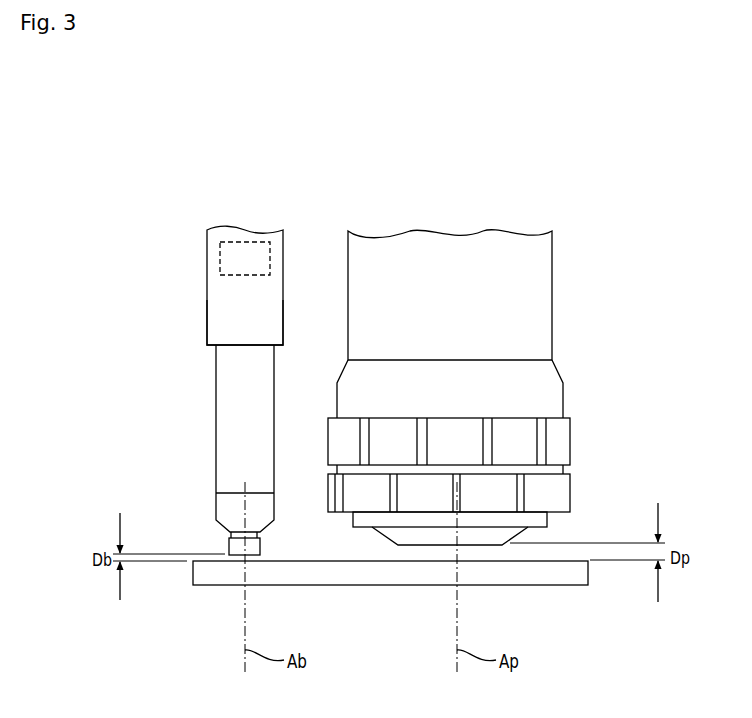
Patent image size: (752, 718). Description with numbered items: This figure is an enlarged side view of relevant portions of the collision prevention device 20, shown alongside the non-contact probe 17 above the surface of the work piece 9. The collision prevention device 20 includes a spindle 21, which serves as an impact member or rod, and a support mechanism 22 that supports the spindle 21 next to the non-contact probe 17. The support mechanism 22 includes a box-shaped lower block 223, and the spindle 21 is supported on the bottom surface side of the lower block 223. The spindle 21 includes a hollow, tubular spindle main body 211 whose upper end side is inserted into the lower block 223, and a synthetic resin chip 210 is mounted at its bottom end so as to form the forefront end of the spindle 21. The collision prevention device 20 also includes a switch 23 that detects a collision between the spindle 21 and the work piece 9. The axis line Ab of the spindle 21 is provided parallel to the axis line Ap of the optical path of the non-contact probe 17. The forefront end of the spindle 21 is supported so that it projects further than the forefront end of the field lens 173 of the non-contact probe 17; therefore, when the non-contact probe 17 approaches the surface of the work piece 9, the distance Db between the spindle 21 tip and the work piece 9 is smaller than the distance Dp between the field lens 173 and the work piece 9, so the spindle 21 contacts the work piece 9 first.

The collision prevention device 20 is at (265, 164).
The support mechanism 22 is at (204, 237).
The switch 23 is at (240, 252).
The lower block 223 is at (212, 298).
The spindle 21 is at (124, 396).
The chip 210 is at (220, 432).
The spindle main body 211 is at (227, 549).
The non-contact probe 17 is at (554, 199).
The field lens 173 is at (565, 494).
The work piece 9 is at (587, 575).